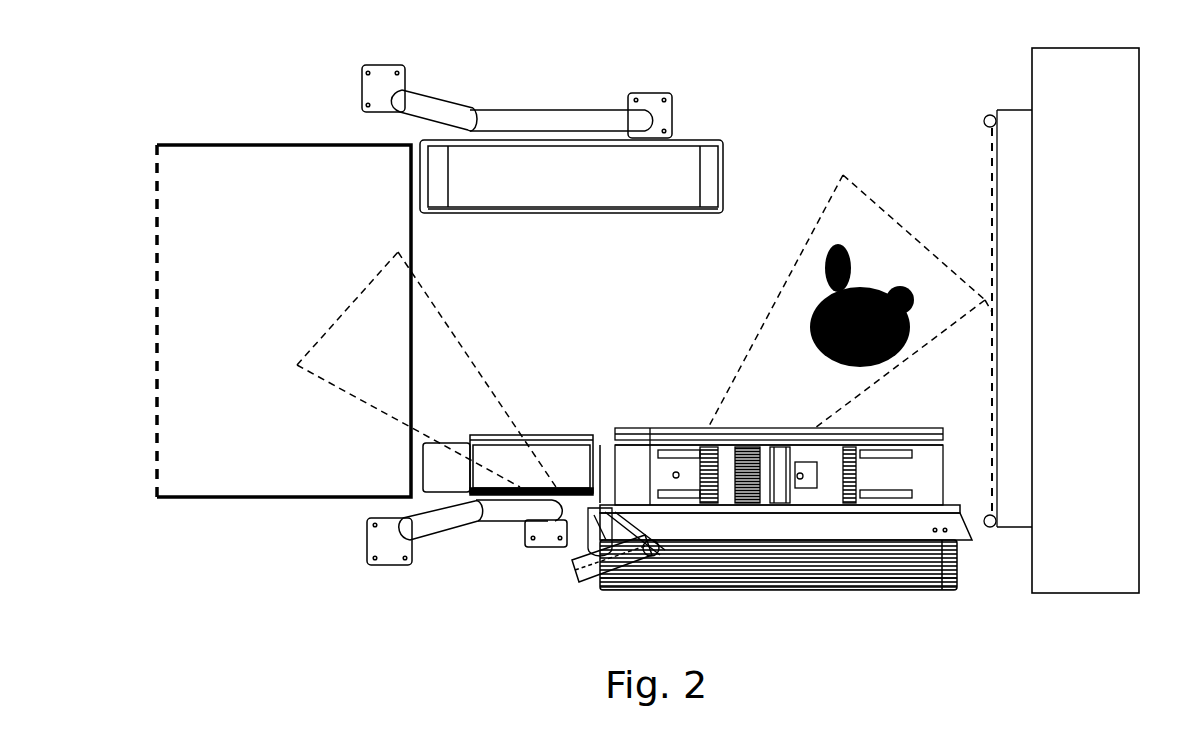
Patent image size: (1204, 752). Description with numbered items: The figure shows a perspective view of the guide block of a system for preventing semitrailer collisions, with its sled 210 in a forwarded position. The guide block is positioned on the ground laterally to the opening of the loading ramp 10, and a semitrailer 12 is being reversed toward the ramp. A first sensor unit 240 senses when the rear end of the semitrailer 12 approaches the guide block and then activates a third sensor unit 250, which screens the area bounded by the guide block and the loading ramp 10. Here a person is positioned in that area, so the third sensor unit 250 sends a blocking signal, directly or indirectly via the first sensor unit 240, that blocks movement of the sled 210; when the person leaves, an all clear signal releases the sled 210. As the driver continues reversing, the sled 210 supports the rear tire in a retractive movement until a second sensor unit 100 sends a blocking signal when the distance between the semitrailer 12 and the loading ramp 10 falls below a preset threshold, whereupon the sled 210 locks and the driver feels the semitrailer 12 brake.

The loading ramp 10 is at (1125, 155).
The semitrailer 12 is at (288, 186).
The second sensor unit 100 is at (985, 119).
The sled 210 is at (783, 490).
The first sensor unit 240 is at (590, 505).
The third sensor unit 250 is at (648, 503).